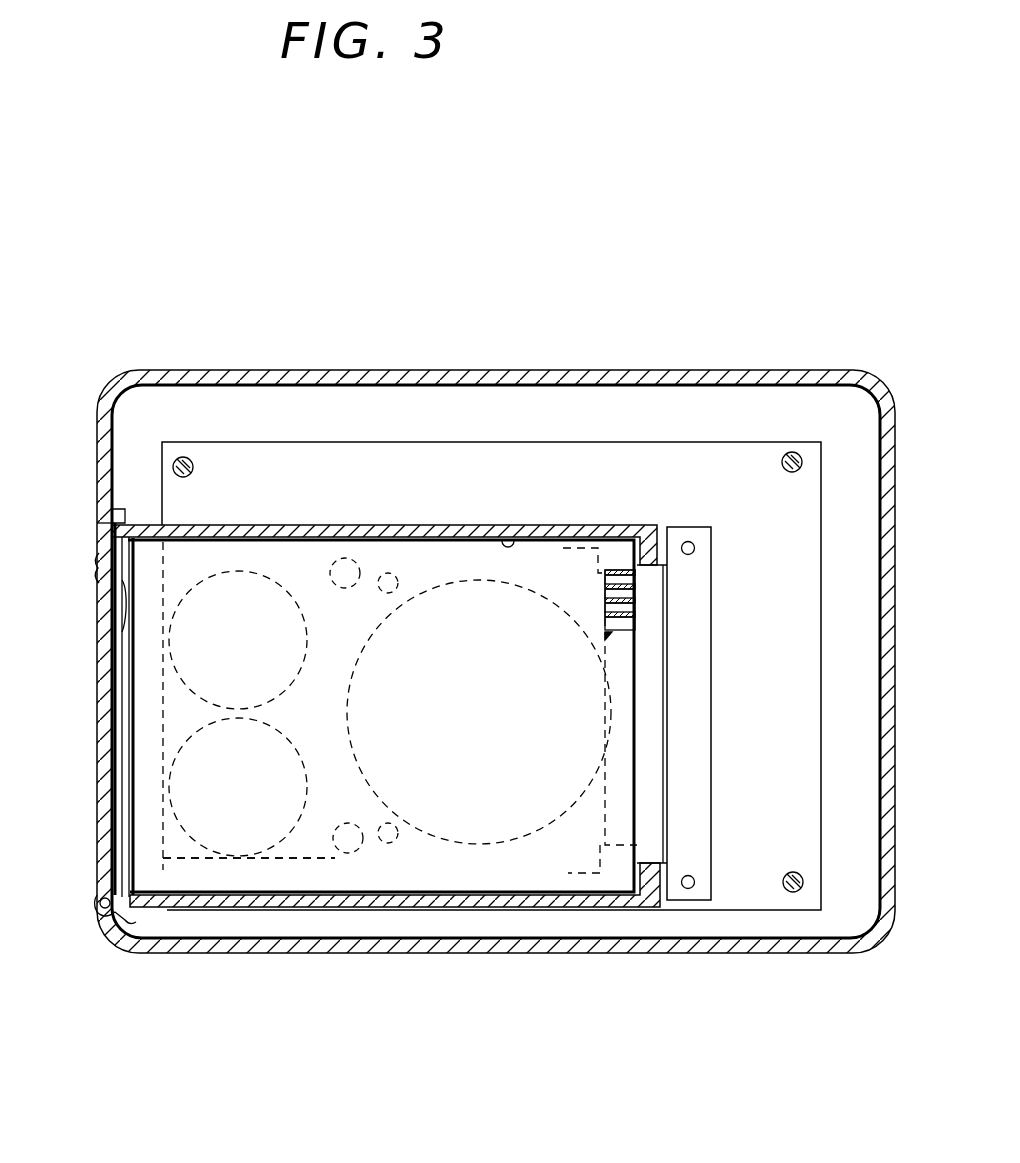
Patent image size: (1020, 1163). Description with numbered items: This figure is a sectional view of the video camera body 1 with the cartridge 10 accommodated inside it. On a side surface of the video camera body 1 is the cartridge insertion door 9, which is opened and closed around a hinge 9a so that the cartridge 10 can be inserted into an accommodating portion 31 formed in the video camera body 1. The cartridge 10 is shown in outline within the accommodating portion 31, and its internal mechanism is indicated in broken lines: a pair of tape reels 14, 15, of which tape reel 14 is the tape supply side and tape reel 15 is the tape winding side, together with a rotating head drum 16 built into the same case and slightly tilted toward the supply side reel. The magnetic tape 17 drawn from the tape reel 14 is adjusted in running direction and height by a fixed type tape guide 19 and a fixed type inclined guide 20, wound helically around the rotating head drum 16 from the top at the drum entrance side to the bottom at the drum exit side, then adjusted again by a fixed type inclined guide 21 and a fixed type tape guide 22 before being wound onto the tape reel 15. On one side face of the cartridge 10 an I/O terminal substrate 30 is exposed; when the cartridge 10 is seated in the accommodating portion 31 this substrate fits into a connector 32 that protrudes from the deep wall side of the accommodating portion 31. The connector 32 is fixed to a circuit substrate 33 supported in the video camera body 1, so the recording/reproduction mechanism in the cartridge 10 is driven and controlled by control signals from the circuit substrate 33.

The video camera body 1 is at (578, 370).
The cartridge insertion door 9 is at (100, 718).
The hinge 9a is at (99, 906).
The cartridge 10 is at (436, 858).
The tape reel 14 is at (233, 827).
The tape reel 15 is at (227, 585).
The rotating head drum 16 is at (520, 815).
The magnetic tape 17 is at (280, 857).
The fixed type tape guide 19 is at (337, 853).
The fixed type inclined guide 20 is at (388, 838).
The fixed type inclined guide 21 is at (395, 583).
The fixed type tape guide 22 is at (343, 557).
The I/O terminal substrate 30 is at (640, 627).
The accommodating portion 31 is at (515, 538).
The connector 32 is at (650, 660).
The circuit substrate 33 is at (663, 453).